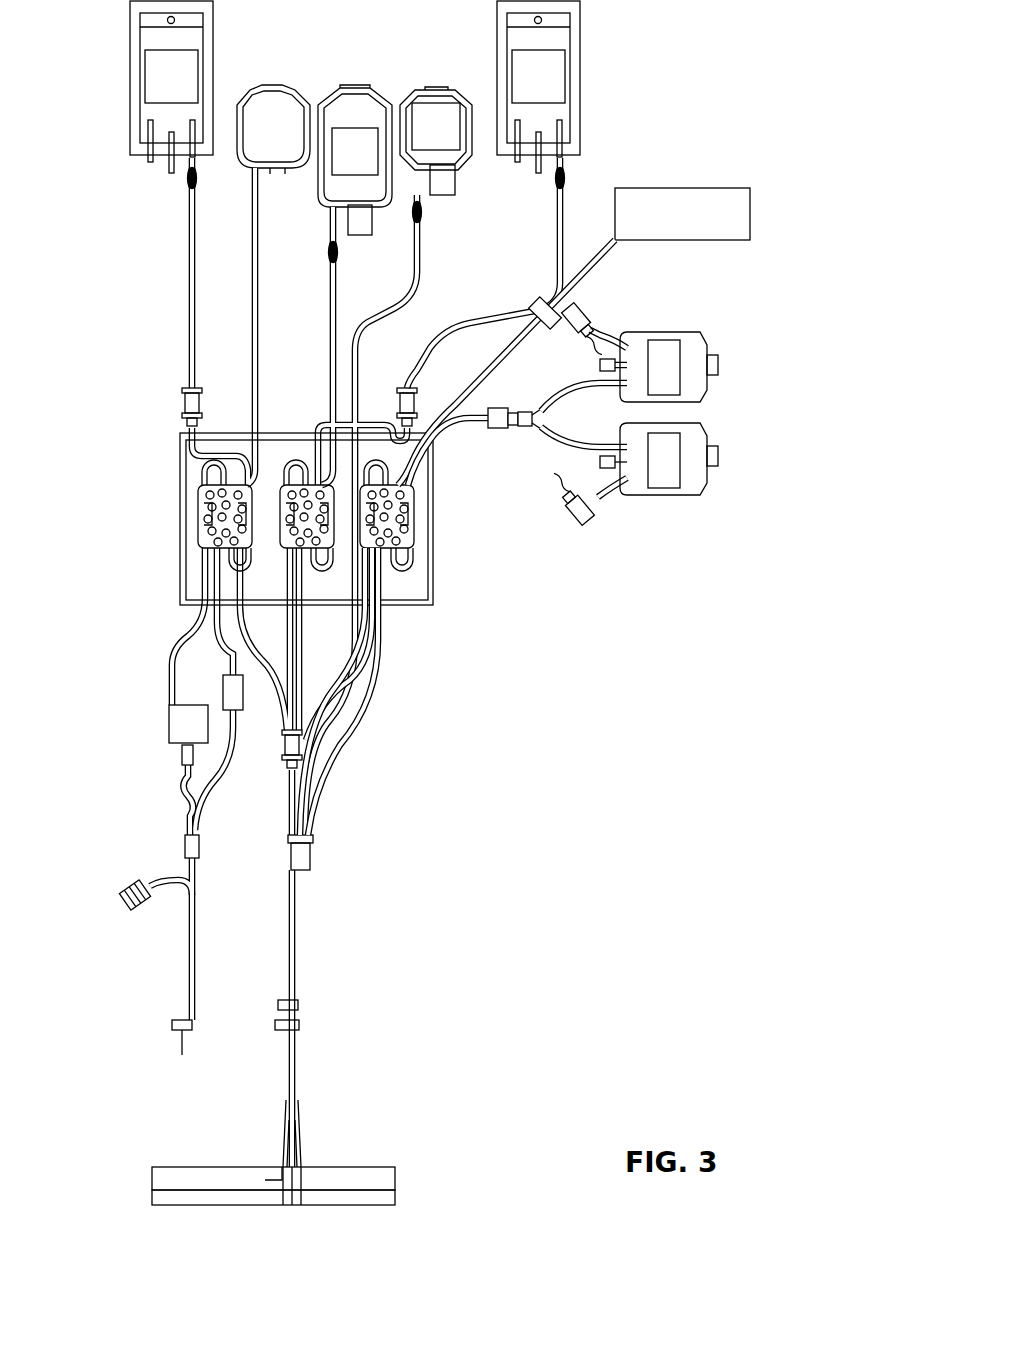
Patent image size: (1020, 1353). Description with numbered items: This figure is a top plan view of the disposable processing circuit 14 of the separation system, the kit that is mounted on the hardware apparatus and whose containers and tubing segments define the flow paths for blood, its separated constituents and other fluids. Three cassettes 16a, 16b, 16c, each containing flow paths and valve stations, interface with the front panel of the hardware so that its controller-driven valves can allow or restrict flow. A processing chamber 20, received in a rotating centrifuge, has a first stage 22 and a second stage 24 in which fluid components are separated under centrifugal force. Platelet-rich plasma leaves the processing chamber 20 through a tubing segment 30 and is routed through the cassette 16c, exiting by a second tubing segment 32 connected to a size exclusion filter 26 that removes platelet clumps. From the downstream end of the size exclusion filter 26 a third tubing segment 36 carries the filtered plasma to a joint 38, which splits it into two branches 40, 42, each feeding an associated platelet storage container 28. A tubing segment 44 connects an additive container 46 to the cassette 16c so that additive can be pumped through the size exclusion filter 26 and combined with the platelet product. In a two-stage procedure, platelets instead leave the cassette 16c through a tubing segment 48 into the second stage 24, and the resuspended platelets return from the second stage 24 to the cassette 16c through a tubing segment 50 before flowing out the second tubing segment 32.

The disposable processing circuit 14 is at (606, 780).
The cassette 16a is at (198, 523).
The cassette 16b is at (280, 540).
The cassette 16c is at (414, 545).
The processing chamber 20 is at (293, 1208).
The first stage 22 is at (170, 1193).
The second stage 24 is at (395, 1185).
The size exclusion filter 26 is at (498, 430).
The platelet storage container 28 is at (733, 385).
The tubing segment 30 is at (350, 765).
The second tubing segment 32 is at (420, 466).
The third tubing segment 36 is at (512, 410).
The joint 38 is at (523, 410).
The branch 40 is at (560, 396).
The branch 42 is at (568, 450).
The tubing segment 44 is at (586, 272).
The additive container 46 is at (696, 227).
The tubing segment 48 is at (342, 692).
The tubing segment 50 is at (330, 792).